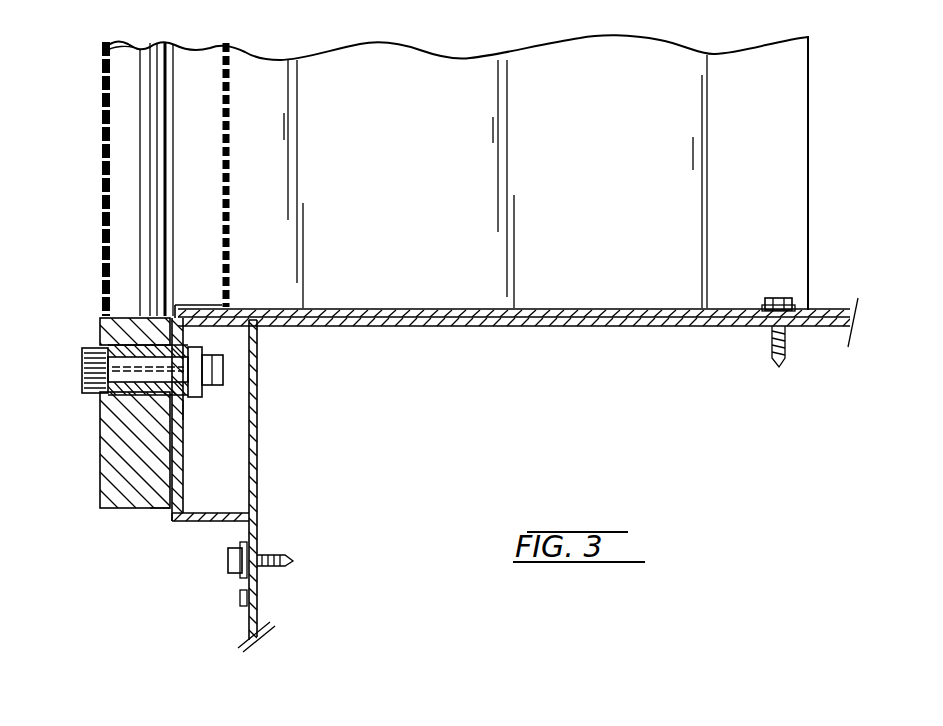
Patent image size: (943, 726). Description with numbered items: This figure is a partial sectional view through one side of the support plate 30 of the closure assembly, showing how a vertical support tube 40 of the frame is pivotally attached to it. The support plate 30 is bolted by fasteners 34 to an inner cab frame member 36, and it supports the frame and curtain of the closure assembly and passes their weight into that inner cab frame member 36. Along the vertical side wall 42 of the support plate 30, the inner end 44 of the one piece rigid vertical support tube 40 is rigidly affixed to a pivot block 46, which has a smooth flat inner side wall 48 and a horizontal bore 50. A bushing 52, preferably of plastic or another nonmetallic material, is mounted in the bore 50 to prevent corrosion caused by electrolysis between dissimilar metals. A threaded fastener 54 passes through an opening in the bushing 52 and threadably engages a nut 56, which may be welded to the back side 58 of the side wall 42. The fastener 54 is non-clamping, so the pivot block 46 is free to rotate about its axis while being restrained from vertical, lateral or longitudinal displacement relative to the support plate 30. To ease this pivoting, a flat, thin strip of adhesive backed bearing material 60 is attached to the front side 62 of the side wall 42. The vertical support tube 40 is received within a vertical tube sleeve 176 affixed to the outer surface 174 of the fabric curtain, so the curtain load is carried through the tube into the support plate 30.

The support plate 30 is at (488, 318).
The fasteners 34 is at (772, 357).
The inner cab frame member 36 is at (255, 535).
The vertical support tube 40 is at (140, 192).
The side wall of support plate 42 is at (182, 512).
The inner end of vertical support tube 44 is at (123, 305).
The pivot block 46 is at (100, 440).
The inner side wall of pivot block 48 is at (180, 473).
The horizontal bore 50 is at (100, 328).
The bushing 52 is at (112, 402).
The threaded fastener 54 is at (82, 375).
The nut 56 is at (205, 342).
The back side of support plate side wall 58 is at (187, 410).
The bearing strip 60 is at (172, 517).
The front side of support plate side wall 62 is at (158, 502).
The outer surface of curtain 174 is at (217, 118).
The vertical tube sleeve 176 is at (110, 165).